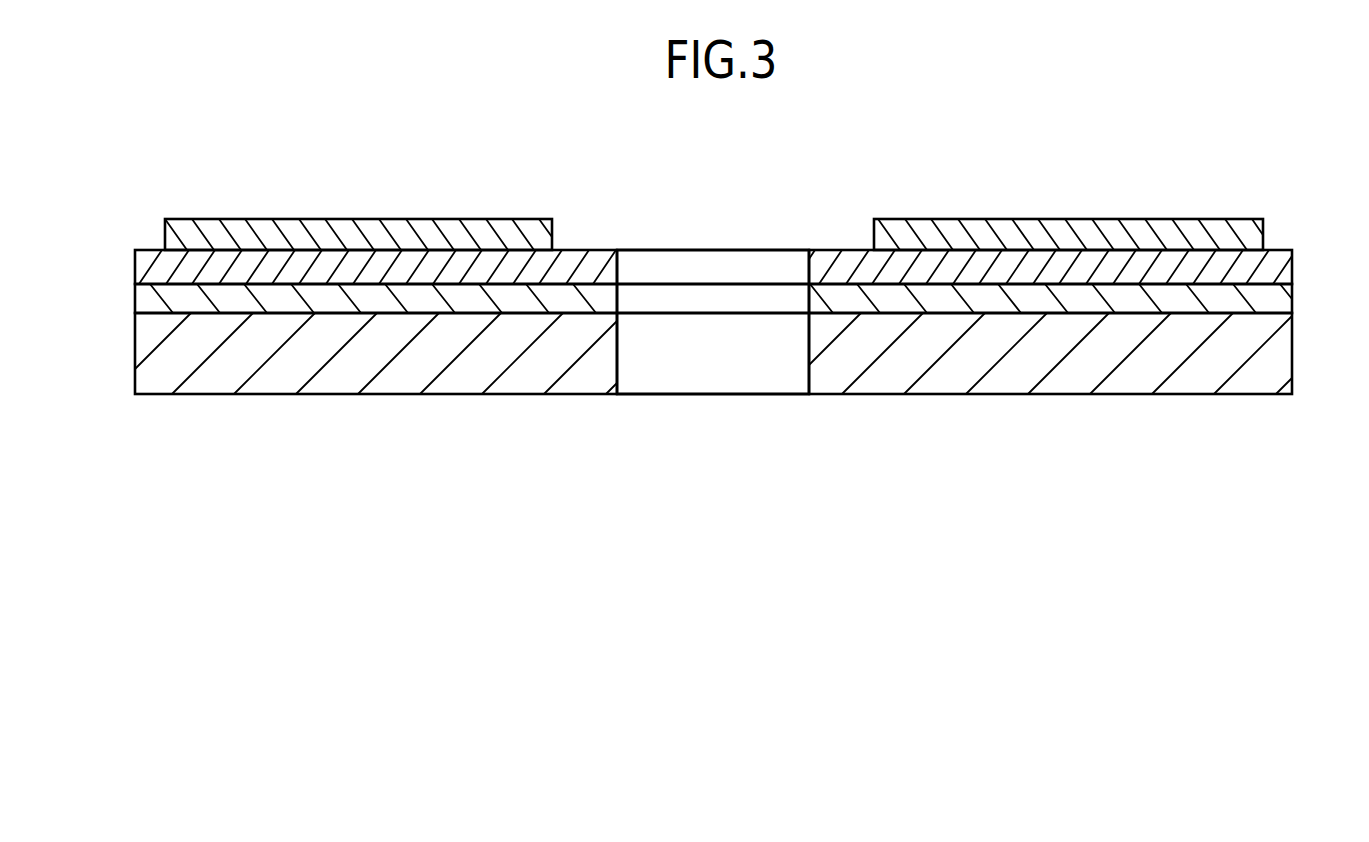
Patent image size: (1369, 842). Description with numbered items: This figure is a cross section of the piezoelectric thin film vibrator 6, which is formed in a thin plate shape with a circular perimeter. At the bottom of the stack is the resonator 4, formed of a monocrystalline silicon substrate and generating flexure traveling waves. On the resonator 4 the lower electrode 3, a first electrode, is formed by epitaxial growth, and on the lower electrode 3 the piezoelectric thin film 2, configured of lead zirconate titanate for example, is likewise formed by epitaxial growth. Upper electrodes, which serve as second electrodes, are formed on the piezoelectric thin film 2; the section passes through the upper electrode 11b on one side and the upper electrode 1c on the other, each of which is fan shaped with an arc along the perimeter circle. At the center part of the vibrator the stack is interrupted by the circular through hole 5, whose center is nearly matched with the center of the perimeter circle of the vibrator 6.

The piezoelectric thin film 2 is at (150, 268).
The lower electrode 3 is at (150, 301).
The resonator 4 is at (150, 367).
The through hole 5 is at (714, 196).
The piezoelectric thin film vibrator 6 is at (706, 306).
The upper electrode 11b is at (165, 233).
The upper electrode 1c is at (1263, 233).